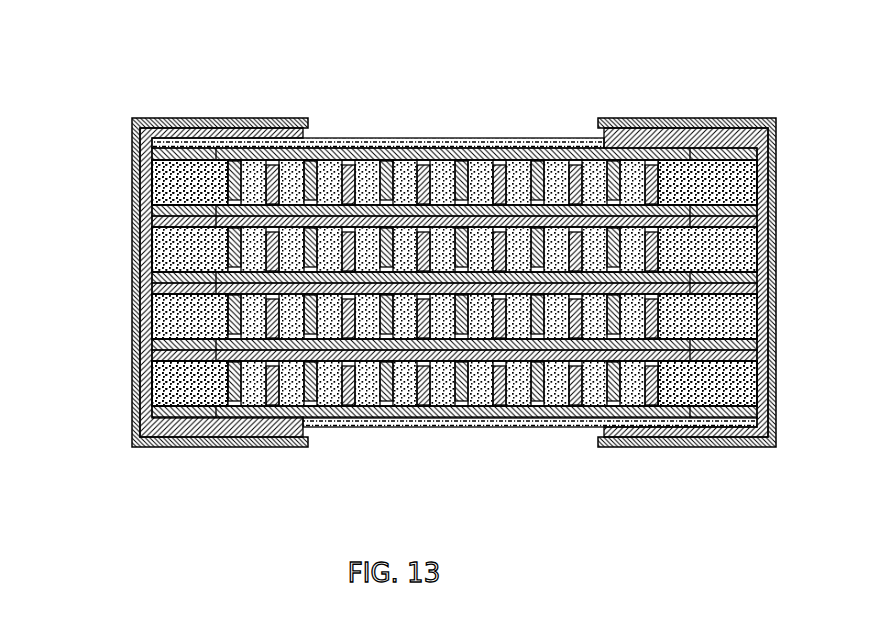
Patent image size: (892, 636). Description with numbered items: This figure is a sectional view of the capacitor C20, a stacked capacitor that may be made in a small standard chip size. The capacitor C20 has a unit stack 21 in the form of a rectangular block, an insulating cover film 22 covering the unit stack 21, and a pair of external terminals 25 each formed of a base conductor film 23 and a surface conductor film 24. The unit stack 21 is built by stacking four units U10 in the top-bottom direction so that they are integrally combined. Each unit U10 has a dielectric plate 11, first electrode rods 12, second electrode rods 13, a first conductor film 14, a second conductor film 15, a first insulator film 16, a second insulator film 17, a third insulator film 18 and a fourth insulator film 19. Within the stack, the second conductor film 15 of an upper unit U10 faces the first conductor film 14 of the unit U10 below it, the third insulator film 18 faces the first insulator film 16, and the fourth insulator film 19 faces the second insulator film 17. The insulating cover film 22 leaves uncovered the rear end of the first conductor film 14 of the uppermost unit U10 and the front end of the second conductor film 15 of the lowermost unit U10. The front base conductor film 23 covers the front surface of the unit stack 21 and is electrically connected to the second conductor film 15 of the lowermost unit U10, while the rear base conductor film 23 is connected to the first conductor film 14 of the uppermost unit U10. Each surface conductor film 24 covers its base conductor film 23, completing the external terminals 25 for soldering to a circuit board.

The capacitor C20 is at (144, 115).
The external terminal 25 is at (454, 234).
The surface conductor film 24 is at (290, 66).
The base conductor film 23 is at (270, 131).
The unit stack 21 is at (478, 144).
The insulating cover film 22 is at (520, 144).
The first conductor film 14 is at (365, 215).
The first electrode rods 12 is at (390, 185).
The second electrode rods 13 is at (424, 185).
The second conductor film 15 is at (574, 252).
The first insulator film 16 is at (172, 252).
The third insulator film 18 is at (203, 252).
The second insulator film 17 is at (742, 252).
The fourth insulator film 19 is at (706, 252).
The unit U10 is at (130, 150).
The dielectric plate 11 is at (152, 186).